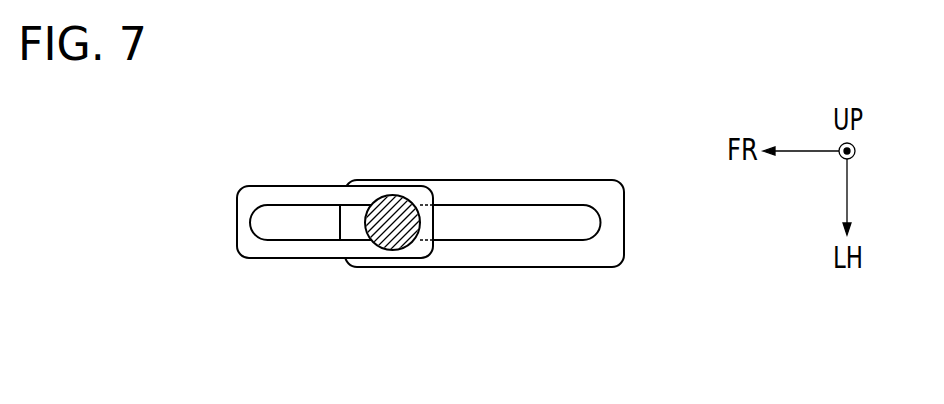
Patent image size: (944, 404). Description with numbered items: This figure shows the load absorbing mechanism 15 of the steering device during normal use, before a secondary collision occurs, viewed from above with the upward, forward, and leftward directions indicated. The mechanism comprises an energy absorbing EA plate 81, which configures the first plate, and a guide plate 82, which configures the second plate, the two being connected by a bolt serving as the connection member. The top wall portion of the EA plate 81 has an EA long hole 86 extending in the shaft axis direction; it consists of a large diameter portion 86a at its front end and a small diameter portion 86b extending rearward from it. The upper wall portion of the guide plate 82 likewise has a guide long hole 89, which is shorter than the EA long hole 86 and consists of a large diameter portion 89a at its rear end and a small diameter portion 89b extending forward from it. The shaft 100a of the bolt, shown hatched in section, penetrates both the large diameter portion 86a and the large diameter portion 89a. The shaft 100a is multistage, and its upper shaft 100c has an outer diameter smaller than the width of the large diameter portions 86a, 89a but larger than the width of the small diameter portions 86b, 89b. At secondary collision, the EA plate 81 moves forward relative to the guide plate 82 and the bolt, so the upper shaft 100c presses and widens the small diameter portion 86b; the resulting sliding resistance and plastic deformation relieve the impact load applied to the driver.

The load absorbing mechanism 15 is at (588, 156).
The EA plate 81 is at (517, 257).
The guide plate 82 is at (243, 205).
The EA long hole 86 is at (498, 142).
The large diameter portion 86a is at (395, 196).
The small diameter portion 86b is at (537, 212).
The guide long hole 89 is at (335, 295).
The large diameter portion 89a is at (420, 221).
The small diameter portion 89b is at (297, 225).
The upper shaft 100c is at (389, 155).
The shaft 100a is at (377, 207).